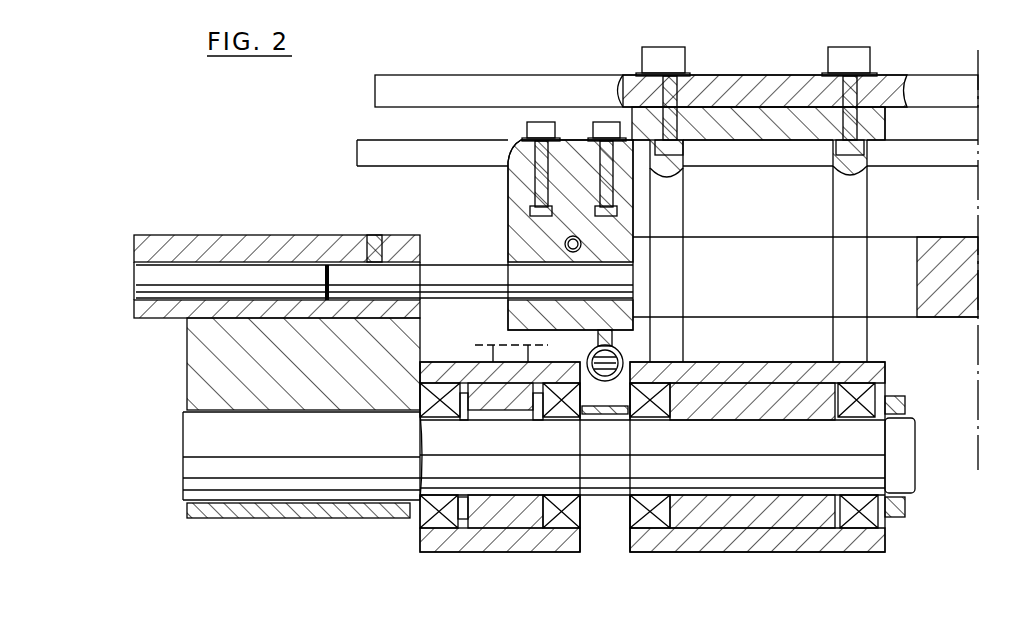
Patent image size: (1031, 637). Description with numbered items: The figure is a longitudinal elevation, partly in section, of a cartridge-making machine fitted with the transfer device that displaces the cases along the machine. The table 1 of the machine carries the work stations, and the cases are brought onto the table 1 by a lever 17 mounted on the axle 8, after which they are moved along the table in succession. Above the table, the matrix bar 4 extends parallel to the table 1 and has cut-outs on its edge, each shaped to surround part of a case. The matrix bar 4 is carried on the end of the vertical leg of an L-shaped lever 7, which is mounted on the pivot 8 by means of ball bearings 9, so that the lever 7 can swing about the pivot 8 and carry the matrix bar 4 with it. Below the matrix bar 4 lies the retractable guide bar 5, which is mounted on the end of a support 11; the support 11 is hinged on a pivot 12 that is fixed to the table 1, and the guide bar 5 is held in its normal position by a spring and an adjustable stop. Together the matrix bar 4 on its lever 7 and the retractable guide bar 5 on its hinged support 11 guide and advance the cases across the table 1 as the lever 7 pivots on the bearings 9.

The table 1 is at (965, 283).
The matrix bar 4 is at (382, 93).
The retractable guide bar 5 is at (372, 152).
The L-shaped lever 7 is at (833, 212).
The pivot 8 is at (340, 470).
The ball bearings 9 is at (655, 523).
The support 11 is at (515, 206).
The pivot 12 is at (148, 283).
The lever 17 is at (515, 540).